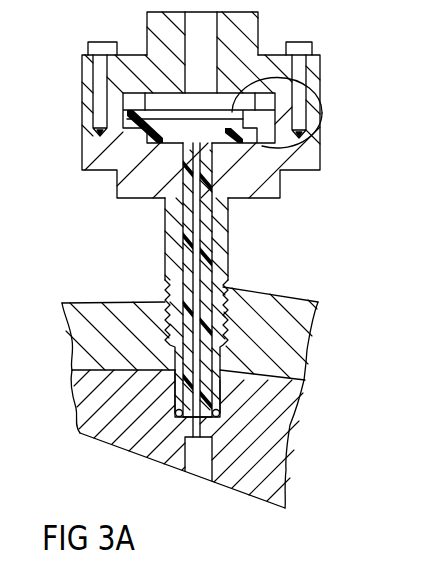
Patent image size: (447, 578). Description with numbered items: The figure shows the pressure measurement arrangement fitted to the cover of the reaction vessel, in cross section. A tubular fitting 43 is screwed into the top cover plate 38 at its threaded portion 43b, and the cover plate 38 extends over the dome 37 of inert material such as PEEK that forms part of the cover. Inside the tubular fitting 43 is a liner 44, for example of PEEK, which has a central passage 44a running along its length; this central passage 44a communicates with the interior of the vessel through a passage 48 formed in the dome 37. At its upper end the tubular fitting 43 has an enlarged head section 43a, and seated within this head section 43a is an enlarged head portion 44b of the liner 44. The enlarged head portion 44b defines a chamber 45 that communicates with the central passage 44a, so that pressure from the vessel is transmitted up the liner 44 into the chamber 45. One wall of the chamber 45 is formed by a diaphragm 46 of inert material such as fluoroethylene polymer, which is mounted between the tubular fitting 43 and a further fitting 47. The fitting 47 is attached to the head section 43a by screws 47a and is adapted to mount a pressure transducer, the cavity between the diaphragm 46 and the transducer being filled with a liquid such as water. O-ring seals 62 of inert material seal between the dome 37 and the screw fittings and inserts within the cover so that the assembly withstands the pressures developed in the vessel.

The dome 37 is at (110, 418).
The top plate 38 is at (102, 353).
The tubular fitting 43 is at (180, 222).
The enlarged head section 43a is at (88, 163).
The threaded portion 43b is at (167, 289).
The liner 44 is at (212, 222).
The central passage 44a is at (200, 268).
The enlarged head portion 44b is at (300, 146).
The chamber 45 is at (170, 121).
The diaphragm 46 is at (258, 79).
The fitting 47 is at (147, 23).
The screws 47a is at (296, 42).
The passage 48 is at (195, 467).
The O-ring seal 62 is at (222, 422).